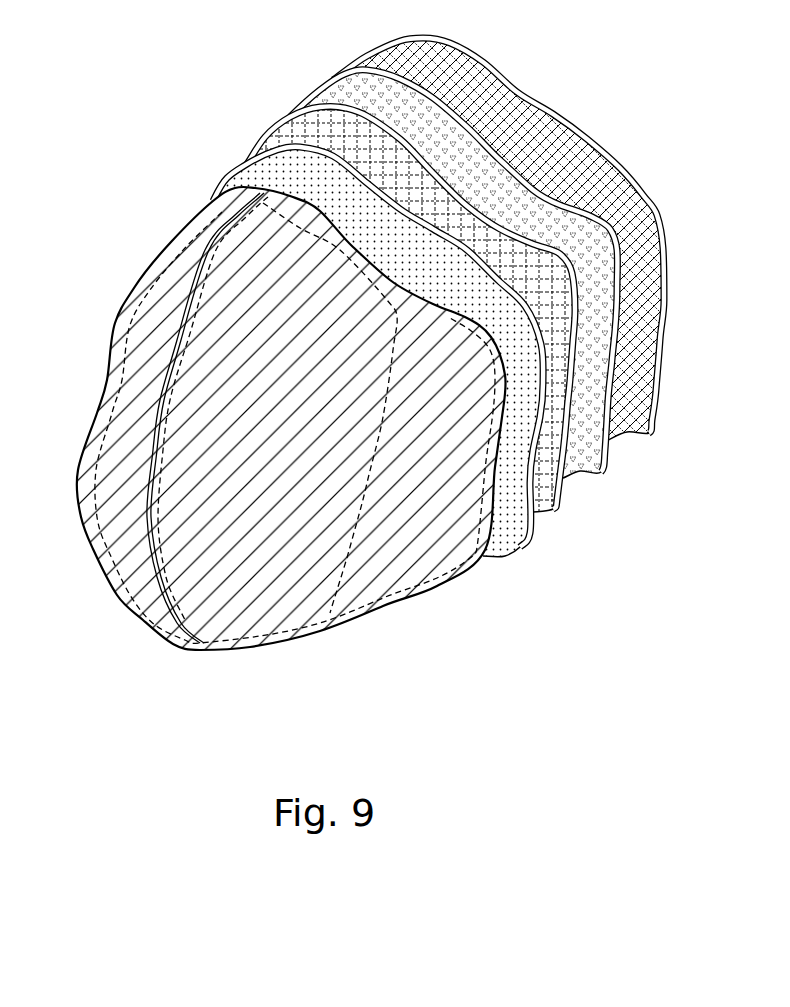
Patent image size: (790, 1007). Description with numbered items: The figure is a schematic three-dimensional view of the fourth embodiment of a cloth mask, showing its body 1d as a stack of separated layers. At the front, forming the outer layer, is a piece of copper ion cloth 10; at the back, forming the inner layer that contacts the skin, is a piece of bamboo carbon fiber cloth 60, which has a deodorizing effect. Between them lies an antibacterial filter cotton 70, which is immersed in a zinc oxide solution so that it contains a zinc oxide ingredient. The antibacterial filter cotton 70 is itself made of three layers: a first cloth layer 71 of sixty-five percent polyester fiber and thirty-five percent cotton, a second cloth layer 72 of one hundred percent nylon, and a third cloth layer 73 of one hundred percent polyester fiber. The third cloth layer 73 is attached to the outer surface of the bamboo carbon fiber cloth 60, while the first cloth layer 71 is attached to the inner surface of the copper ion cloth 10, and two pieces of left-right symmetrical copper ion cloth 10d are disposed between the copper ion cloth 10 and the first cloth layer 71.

The body 1d is at (337, 8).
The copper ion cloth 10 is at (275, 432).
The left-right symmetrical copper ion cloth 10d is at (195, 650).
The bamboo carbon fiber cloth 60 is at (573, 142).
The antibacterial filter cotton 70 is at (688, 505).
The first cloth layer 71 is at (503, 537).
The second cloth layer 72 is at (540, 497).
The third cloth layer 73 is at (587, 470).